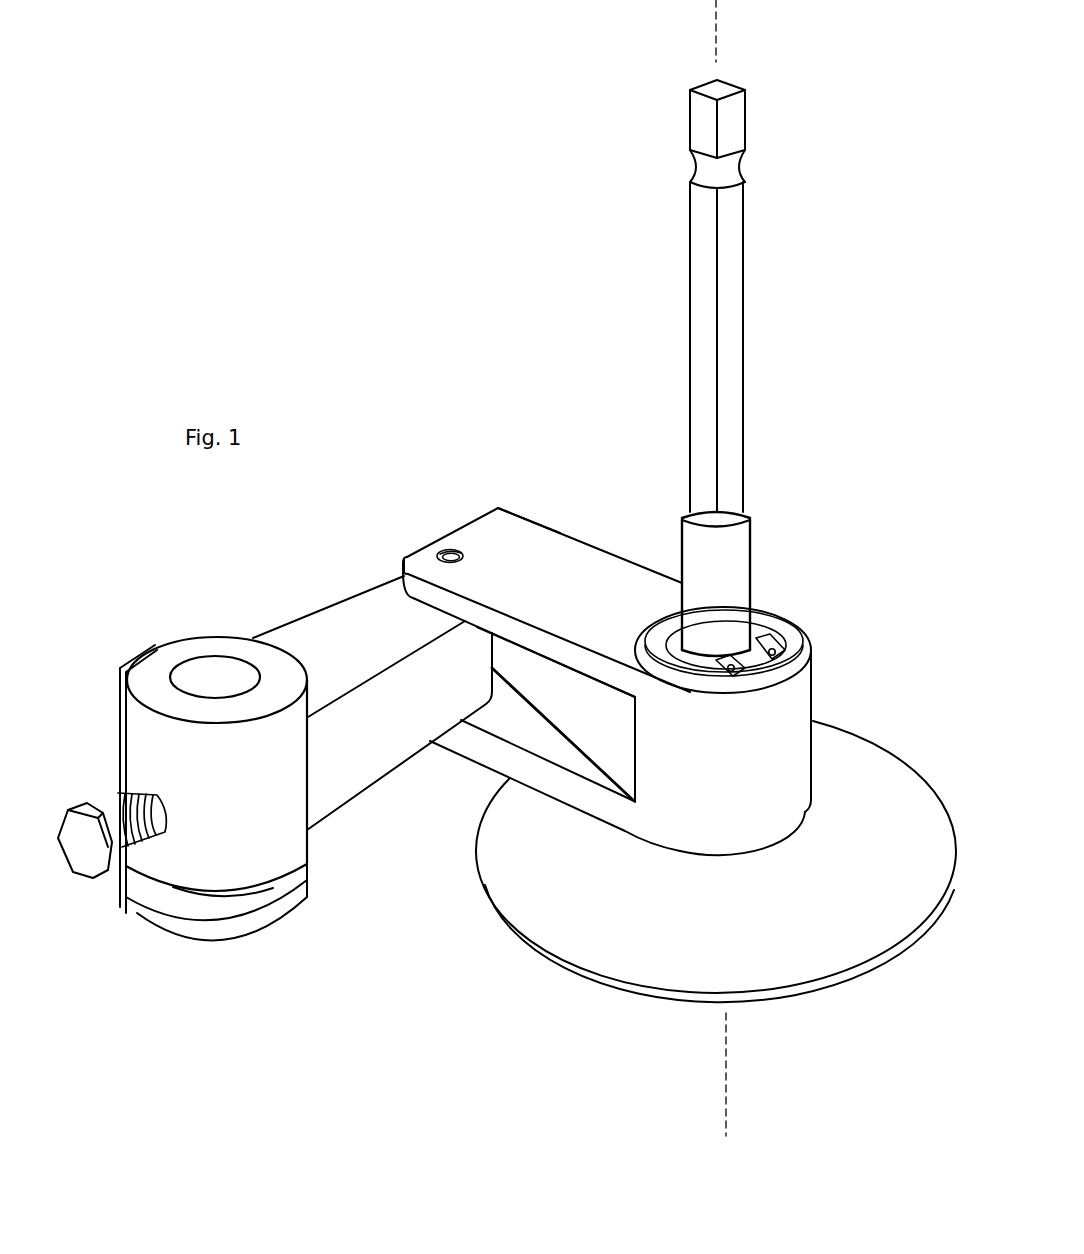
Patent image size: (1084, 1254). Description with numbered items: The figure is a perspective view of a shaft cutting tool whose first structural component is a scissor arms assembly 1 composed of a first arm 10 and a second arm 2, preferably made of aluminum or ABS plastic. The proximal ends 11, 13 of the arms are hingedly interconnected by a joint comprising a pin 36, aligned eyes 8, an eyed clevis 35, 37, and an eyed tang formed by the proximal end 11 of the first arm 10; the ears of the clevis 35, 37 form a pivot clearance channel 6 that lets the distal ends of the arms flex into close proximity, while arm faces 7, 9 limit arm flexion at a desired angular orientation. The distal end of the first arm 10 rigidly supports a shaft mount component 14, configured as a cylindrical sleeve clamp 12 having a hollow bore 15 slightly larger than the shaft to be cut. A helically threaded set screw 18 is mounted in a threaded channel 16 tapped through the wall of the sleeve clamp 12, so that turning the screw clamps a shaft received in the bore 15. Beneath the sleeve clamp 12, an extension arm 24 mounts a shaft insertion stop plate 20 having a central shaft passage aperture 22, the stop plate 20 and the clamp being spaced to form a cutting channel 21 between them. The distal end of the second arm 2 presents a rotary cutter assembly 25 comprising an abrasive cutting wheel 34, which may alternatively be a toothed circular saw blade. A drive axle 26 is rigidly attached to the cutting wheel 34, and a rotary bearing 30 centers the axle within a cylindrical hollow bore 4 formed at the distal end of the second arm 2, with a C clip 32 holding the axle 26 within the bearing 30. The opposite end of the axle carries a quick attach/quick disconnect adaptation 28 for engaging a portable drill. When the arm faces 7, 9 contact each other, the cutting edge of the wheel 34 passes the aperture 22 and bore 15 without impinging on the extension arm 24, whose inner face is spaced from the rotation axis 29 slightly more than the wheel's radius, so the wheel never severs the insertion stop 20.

The scissor arms assembly 1 is at (484, 535).
The second arm 2 is at (484, 535).
The cylindrical hollow bore 4 is at (666, 628).
The pivot clearance channel 6 is at (535, 718).
The arm face 7 is at (590, 717).
The aligned eyes 8 is at (466, 551).
The arm face 9 is at (425, 702).
The first arm 10 is at (325, 630).
The proximal end 11 is at (486, 746).
The cylindrical sleeve clamp 12 is at (167, 767).
The proximal end 13 is at (503, 535).
The shaft mount component 14 is at (211, 796).
The hollow bore 15 is at (213, 678).
The threaded channel 16 is at (165, 808).
The helically threaded set screw 18 is at (87, 852).
The shaft insertion stop plate 20 is at (258, 925).
The cutting channel 21 is at (287, 887).
The central shaft passage aperture 22 is at (213, 890).
The extension arm 24 is at (118, 747).
The rotary cutter assembly 25 is at (774, 650).
The drive axle 26 is at (738, 563).
The quick attach/quick disconnect adaptation 28 is at (700, 165).
The rotation axis 29 is at (716, 13).
The rotary bearing 30 is at (777, 640).
The C clip 32 is at (780, 648).
The abrasive cutting wheel 34 is at (822, 947).
The eyed clevis 35 is at (428, 564).
The pin 36 is at (443, 551).
The eyed clevis 37 is at (477, 663).